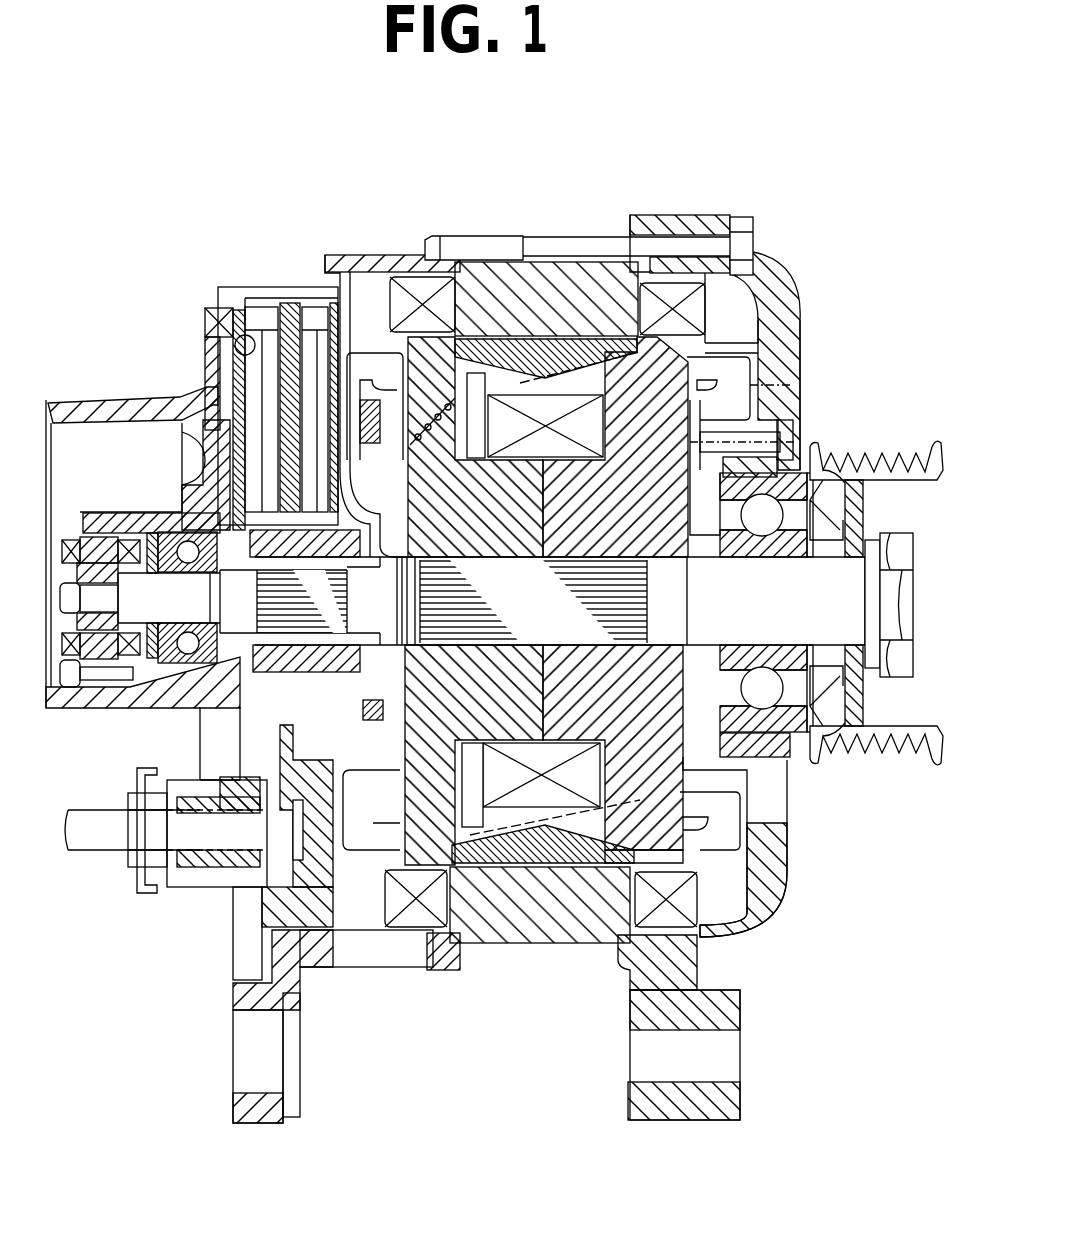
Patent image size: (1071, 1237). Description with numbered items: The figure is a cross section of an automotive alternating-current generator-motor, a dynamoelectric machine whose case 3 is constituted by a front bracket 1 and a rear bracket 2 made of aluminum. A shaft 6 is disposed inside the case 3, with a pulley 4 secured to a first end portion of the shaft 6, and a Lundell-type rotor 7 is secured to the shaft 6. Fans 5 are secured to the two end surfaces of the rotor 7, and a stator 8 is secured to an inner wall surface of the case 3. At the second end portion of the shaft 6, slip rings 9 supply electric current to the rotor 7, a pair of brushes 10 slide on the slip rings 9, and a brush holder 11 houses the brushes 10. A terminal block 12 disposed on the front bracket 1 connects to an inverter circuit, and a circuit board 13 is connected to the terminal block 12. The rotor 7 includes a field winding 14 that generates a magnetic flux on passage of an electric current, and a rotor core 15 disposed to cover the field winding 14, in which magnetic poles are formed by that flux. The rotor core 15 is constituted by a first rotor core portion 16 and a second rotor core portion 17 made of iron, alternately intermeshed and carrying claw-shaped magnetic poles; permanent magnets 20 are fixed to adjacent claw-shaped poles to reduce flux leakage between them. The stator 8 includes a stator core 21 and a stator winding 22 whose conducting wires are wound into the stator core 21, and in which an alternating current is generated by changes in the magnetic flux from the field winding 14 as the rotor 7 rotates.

The front bracket 1 is at (400, 258).
The rear bracket 2 is at (777, 270).
The case 3 is at (800, 307).
The pulley 4 is at (880, 440).
The fans 5 is at (372, 378).
The shaft 6 is at (818, 700).
The Lundell-type rotor 7 is at (705, 775).
The stator 8 is at (717, 305).
The slip rings 9 is at (230, 693).
The brushes 10 is at (263, 337).
The brush holder 11 is at (243, 345).
The terminal block 12 is at (95, 832).
The circuit board 13 is at (263, 877).
The field winding 14 is at (543, 800).
The rotor core 15 is at (627, 780).
The first rotor core portion 16 is at (450, 735).
The second rotor core portion 17 is at (633, 777).
The permanent magnets 20 is at (580, 343).
The stator core 21 is at (553, 285).
The stator winding 22 is at (430, 293).